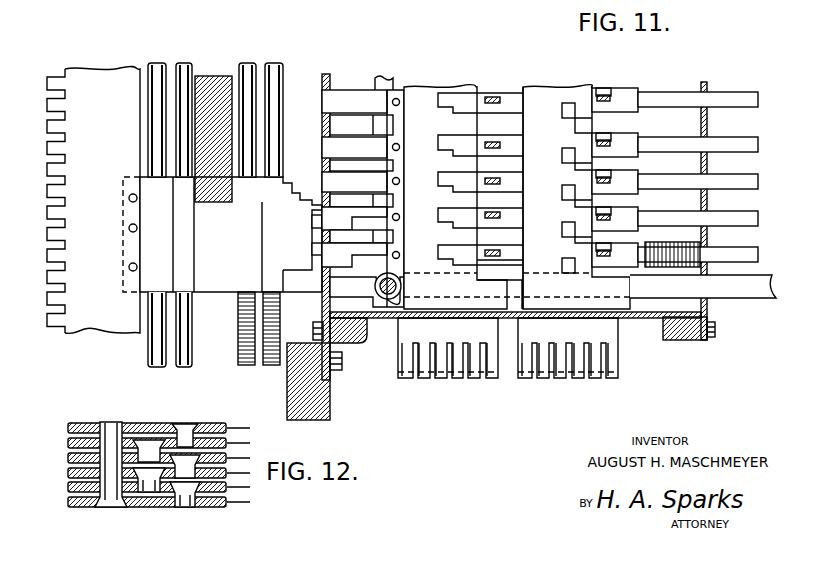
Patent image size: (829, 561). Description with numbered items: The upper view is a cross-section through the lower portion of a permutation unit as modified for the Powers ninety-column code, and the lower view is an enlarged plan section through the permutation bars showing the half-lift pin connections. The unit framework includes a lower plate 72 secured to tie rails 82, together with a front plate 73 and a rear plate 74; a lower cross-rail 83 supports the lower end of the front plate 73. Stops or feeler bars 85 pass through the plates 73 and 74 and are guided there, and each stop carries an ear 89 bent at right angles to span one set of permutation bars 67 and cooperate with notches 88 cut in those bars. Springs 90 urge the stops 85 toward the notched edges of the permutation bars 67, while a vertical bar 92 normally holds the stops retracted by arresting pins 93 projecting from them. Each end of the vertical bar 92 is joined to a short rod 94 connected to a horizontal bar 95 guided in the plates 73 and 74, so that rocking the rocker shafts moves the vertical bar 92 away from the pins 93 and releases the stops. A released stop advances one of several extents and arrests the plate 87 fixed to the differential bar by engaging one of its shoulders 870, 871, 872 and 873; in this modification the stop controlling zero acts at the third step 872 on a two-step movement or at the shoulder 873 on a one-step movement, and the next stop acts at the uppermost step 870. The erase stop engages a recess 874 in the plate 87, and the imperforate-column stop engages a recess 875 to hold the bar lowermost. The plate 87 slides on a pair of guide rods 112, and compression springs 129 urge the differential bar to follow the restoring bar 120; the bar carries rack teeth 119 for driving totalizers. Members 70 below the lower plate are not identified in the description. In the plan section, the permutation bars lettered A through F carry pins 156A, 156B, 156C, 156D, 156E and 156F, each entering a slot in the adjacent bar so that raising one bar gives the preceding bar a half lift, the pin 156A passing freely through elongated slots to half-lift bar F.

In FIG. 11, the rack teeth 119 is at (50, 100).
In FIG. 11, the notches 88 is at (113, 85).
In FIG. 11, the guide rods 112 is at (180, 63).
In FIG. 11, the restoring bar 120 is at (213, 103).
In FIG. 11, the front plate 73 is at (328, 74).
In FIG. 11, the vertical bar 92 is at (380, 77).
In FIG. 11, the pins 93 is at (396, 95).
In FIG. 11, the permutation bars 67 is at (420, 105).
In FIG. 11, the ear 89 is at (488, 95).
In FIG. 11, the stops 85 is at (512, 95).
In FIG. 11, the rear plate 74 is at (704, 82).
In FIG. 11, the uppermost shoulder 870 is at (288, 176).
In FIG. 11, the shoulder 871 is at (297, 190).
In FIG. 11, the third shoulder 872 is at (312, 195).
In FIG. 11, the shoulder 873 is at (320, 205).
In FIG. 11, the recess 874 is at (310, 224).
In FIG. 11, the recess 875 is at (310, 250).
In FIG. 11, the plate 87 is at (211, 265).
In FIG. 12, the plate 87 is at (68, 502).
In FIG. 11, the compression springs 129 is at (240, 315).
In FIG. 11, the short rod 94 is at (392, 285).
In FIG. 11, the springs 90 is at (700, 250).
In FIG. 11, the tie rails 82 is at (365, 343).
In FIG. 11, the terminal blocks 70 is at (470, 376).
In FIG. 11, the lower plate 72 is at (648, 318).
In FIG. 11, the horizontal bars 95 is at (746, 290).
In FIG. 11, the lower cross-rail 83 is at (330, 395).
In FIG. 12, the pin 156A is at (107, 422).
In FIG. 12, the pin 156B is at (183, 495).
In FIG. 12, the pin 156C is at (148, 485).
In FIG. 12, the pin 156D is at (196, 478).
In FIG. 12, the pin 156E is at (147, 440).
In FIG. 12, the pin 156F is at (185, 424).